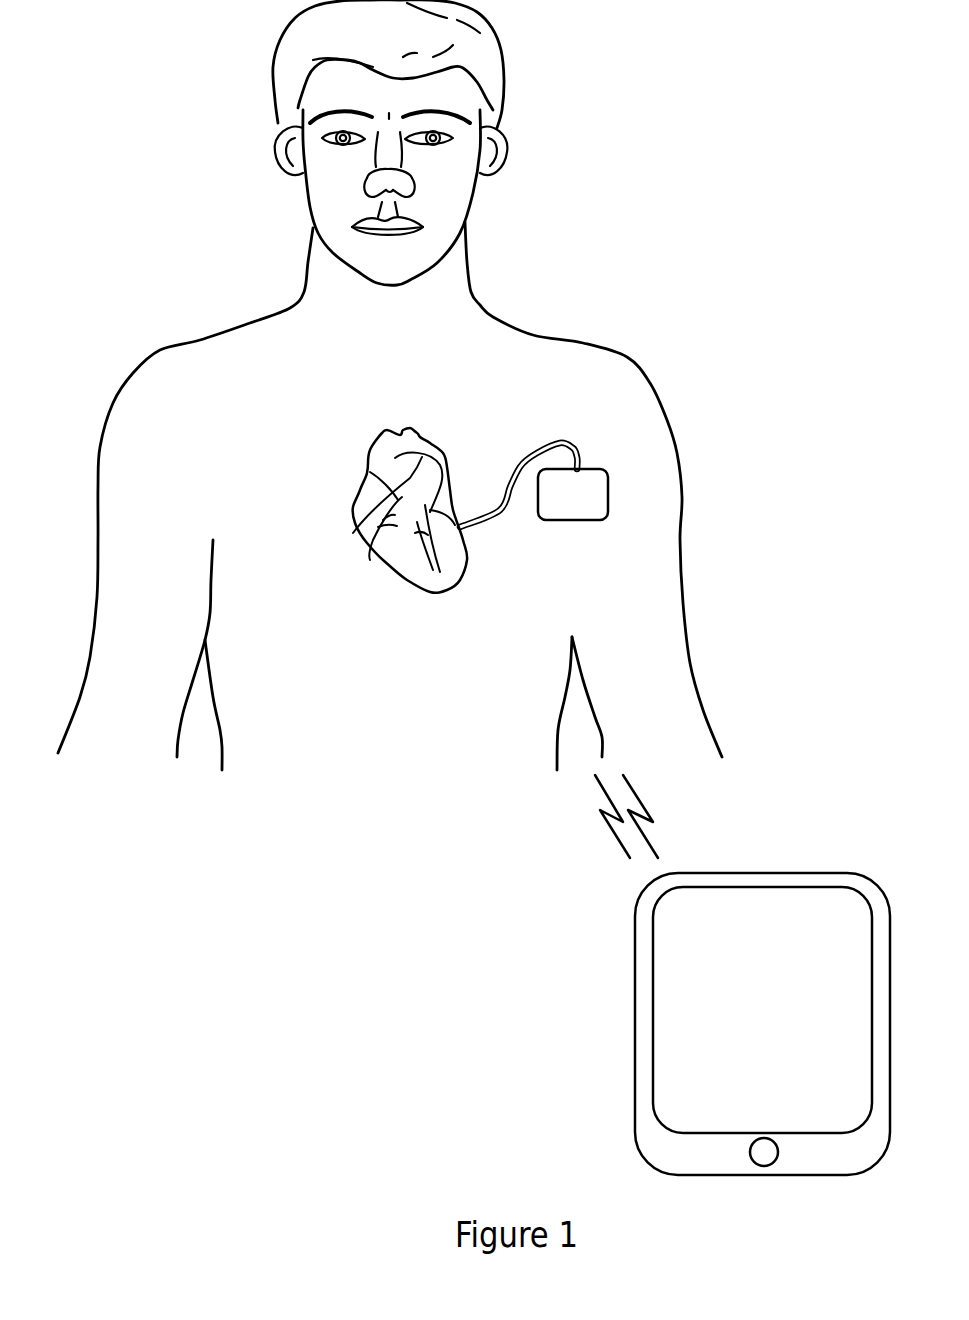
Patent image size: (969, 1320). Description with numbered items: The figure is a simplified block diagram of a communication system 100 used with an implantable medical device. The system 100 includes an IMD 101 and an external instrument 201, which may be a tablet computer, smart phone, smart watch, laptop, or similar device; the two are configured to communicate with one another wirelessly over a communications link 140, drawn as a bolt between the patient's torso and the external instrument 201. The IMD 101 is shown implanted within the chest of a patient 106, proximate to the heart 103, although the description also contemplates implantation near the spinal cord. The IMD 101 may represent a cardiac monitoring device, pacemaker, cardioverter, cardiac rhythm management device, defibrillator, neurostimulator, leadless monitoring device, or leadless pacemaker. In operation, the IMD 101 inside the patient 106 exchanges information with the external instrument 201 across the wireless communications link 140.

The system 100 is at (782, 60).
The patient 106 is at (555, 336).
The IMD 101 is at (583, 521).
The heart 103 is at (393, 577).
The communications link 140 is at (619, 838).
The external instrument 201 is at (810, 873).